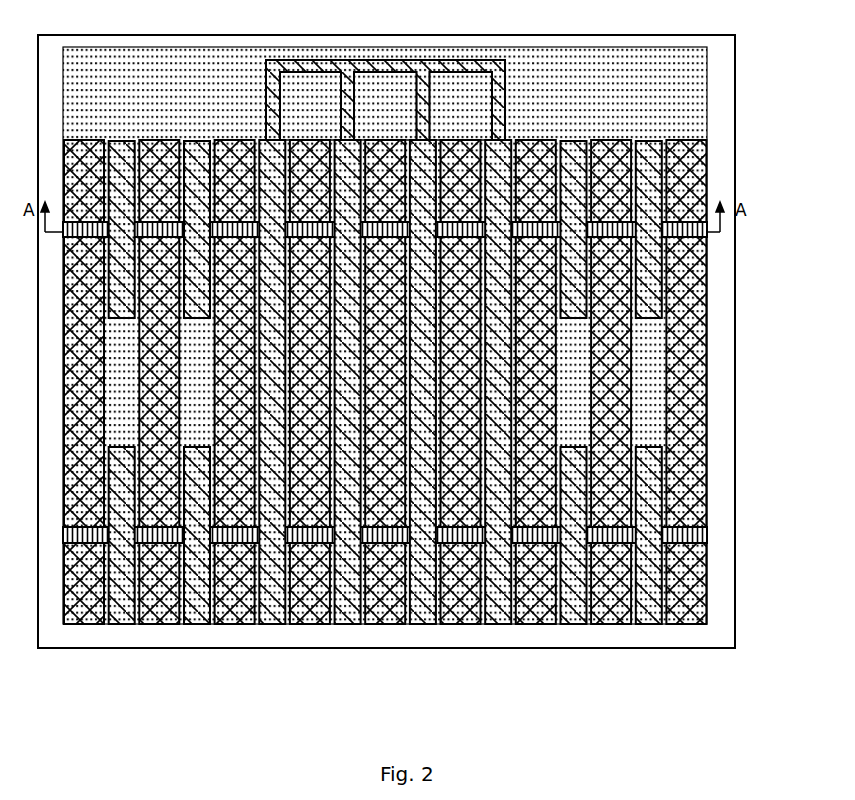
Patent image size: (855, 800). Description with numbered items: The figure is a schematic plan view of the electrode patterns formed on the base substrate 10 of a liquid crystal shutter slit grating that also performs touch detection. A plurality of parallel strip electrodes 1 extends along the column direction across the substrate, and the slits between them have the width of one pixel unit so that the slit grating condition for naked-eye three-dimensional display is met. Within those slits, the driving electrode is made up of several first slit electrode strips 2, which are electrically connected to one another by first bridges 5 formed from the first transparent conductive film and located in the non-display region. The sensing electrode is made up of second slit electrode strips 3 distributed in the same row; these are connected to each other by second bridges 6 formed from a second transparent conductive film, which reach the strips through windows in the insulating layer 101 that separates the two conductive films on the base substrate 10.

The strip electrode 1 is at (690, 190).
The first slit electrode strip 2 is at (501, 158).
The second slit electrode strip 3 is at (645, 260).
The first bridge 5 is at (398, 63).
The second bridge 6 is at (645, 142).
The base substrate 10 is at (717, 73).
The insulating layer 101 is at (690, 118).